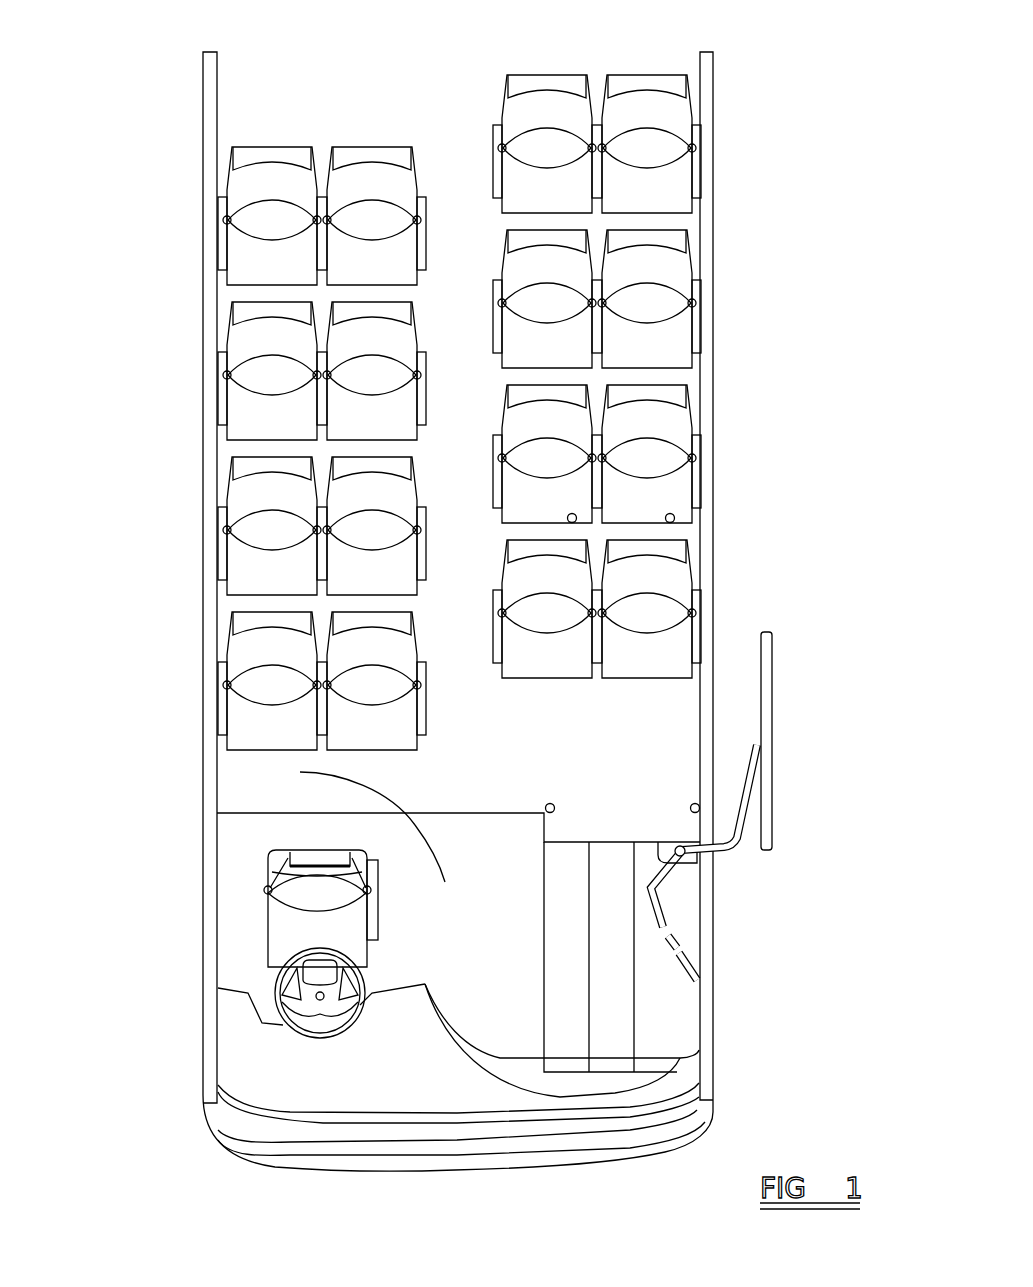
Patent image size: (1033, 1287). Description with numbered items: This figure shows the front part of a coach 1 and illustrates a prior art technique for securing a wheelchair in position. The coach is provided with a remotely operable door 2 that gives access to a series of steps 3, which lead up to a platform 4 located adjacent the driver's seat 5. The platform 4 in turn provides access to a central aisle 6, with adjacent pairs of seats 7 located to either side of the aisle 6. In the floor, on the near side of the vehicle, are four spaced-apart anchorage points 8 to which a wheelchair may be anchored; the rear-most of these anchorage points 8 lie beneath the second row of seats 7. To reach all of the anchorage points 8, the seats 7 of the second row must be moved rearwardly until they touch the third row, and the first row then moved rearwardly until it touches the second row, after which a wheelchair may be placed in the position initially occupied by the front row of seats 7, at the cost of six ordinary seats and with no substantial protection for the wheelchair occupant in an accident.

The coach 1 is at (790, 460).
The door 2 is at (765, 720).
The steps 3 is at (658, 1000).
The platform 4 is at (300, 772).
The driver's seat 5 is at (290, 927).
The central aisle 6 is at (456, 590).
The seats 7 is at (265, 378).
The anchorage points 8 is at (577, 521).